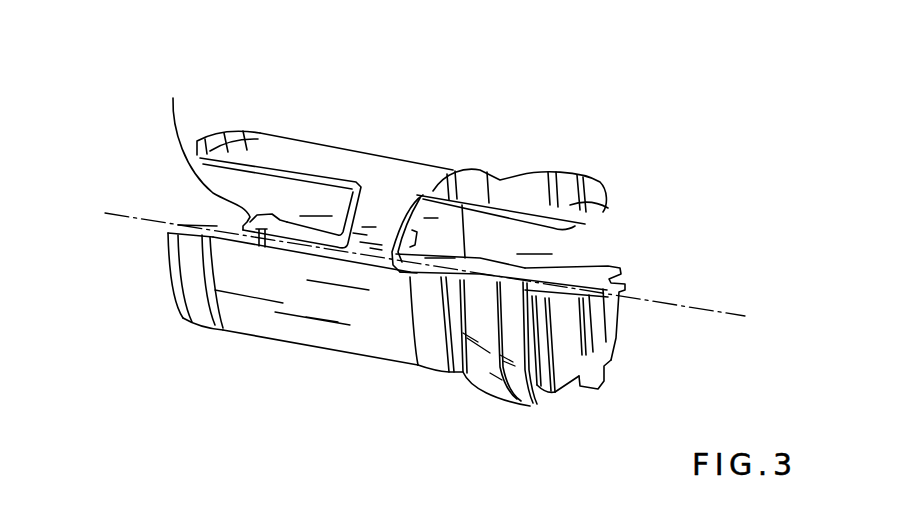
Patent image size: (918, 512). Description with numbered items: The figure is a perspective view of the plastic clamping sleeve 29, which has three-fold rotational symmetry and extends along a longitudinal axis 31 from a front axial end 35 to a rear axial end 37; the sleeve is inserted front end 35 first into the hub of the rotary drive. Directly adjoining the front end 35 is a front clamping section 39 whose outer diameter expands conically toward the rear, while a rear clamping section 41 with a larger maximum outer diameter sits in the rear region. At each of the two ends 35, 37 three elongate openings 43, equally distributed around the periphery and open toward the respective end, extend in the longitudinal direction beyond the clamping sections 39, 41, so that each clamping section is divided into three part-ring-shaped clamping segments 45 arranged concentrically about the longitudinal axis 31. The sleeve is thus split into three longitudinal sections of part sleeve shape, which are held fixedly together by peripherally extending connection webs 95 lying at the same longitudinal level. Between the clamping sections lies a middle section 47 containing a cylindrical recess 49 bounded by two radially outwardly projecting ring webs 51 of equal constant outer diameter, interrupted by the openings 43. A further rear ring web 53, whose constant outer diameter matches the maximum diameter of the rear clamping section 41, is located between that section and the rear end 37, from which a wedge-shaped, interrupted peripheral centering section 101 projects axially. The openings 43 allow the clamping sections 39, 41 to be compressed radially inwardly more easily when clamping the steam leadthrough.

The clamping sleeve 29 is at (97, 98).
The longitudinal axis 31 is at (730, 317).
The front axial end 35 is at (127, 190).
The rear axial end 37 is at (714, 268).
The front clamping section 39 is at (227, 113).
The rear clamping section 41 is at (536, 163).
The openings 43 is at (365, 225).
The clamping segments 45 is at (207, 143).
The middle section 47 is at (293, 363).
The cylindrical recess 49 is at (253, 340).
The ring webs 51 is at (203, 321).
The rear ring web 53 is at (526, 400).
The connection webs 95 is at (369, 227).
The peripheral centering section 101 is at (600, 353).